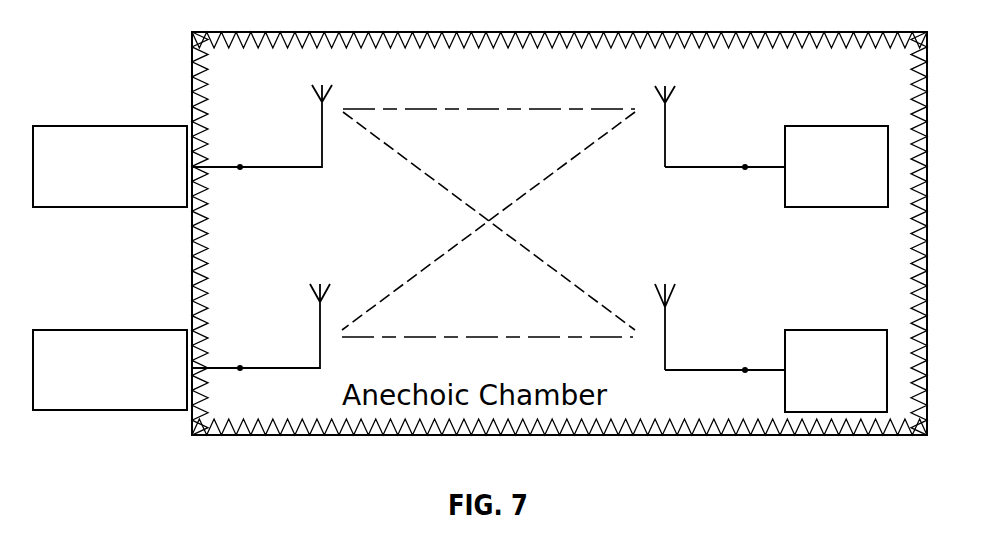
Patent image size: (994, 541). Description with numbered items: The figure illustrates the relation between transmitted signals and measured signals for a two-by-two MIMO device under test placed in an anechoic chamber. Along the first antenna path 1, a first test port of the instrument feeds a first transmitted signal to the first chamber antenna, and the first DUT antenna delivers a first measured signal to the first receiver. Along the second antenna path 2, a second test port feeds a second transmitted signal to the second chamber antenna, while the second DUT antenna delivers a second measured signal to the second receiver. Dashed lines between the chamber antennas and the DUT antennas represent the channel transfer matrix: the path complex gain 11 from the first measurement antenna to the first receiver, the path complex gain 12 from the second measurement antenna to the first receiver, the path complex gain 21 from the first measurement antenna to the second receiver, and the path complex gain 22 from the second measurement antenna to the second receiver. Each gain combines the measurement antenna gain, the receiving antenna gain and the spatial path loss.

The first antenna path 1 is at (460, 135).
The second antenna path 2 is at (460, 334).
The path complex gain a11 11 is at (489, 97).
The path complex gain a12 12 is at (488, 221).
The path complex gain a21 21 is at (489, 221).
The path complex gain a22 22 is at (487, 319).